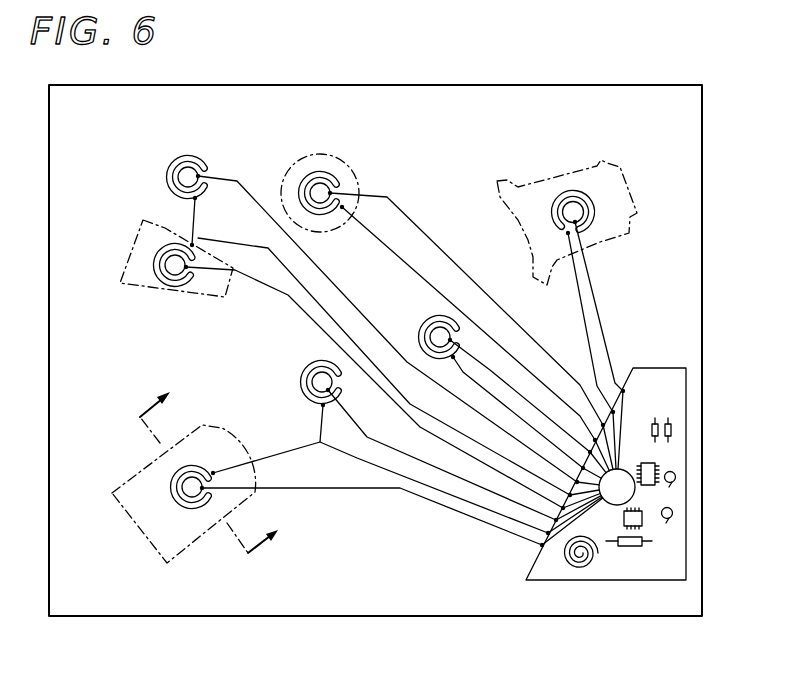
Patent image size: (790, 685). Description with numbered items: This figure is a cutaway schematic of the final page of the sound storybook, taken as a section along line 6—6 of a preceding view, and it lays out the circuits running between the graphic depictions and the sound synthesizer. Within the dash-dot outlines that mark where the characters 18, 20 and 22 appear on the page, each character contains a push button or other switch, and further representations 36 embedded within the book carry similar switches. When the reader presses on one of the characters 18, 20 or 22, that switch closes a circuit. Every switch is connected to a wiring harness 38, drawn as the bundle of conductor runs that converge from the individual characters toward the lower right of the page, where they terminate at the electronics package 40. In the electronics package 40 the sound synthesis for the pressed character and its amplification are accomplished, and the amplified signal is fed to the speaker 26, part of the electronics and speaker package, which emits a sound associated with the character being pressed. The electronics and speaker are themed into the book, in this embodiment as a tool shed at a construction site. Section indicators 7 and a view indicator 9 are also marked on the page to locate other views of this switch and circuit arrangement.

The section line 6 is at (447, 4).
The spiral coil sensor location 9 is at (322, 142).
The other representations 36 is at (199, 156).
The character 22 is at (141, 289).
The character 20 is at (134, 527).
The section line 7- 7 is at (226, 464).
The character 18 is at (602, 163).
The wiring harness 38 is at (500, 426).
The electronics package 40 is at (636, 498).
The speaker 26 is at (574, 553).